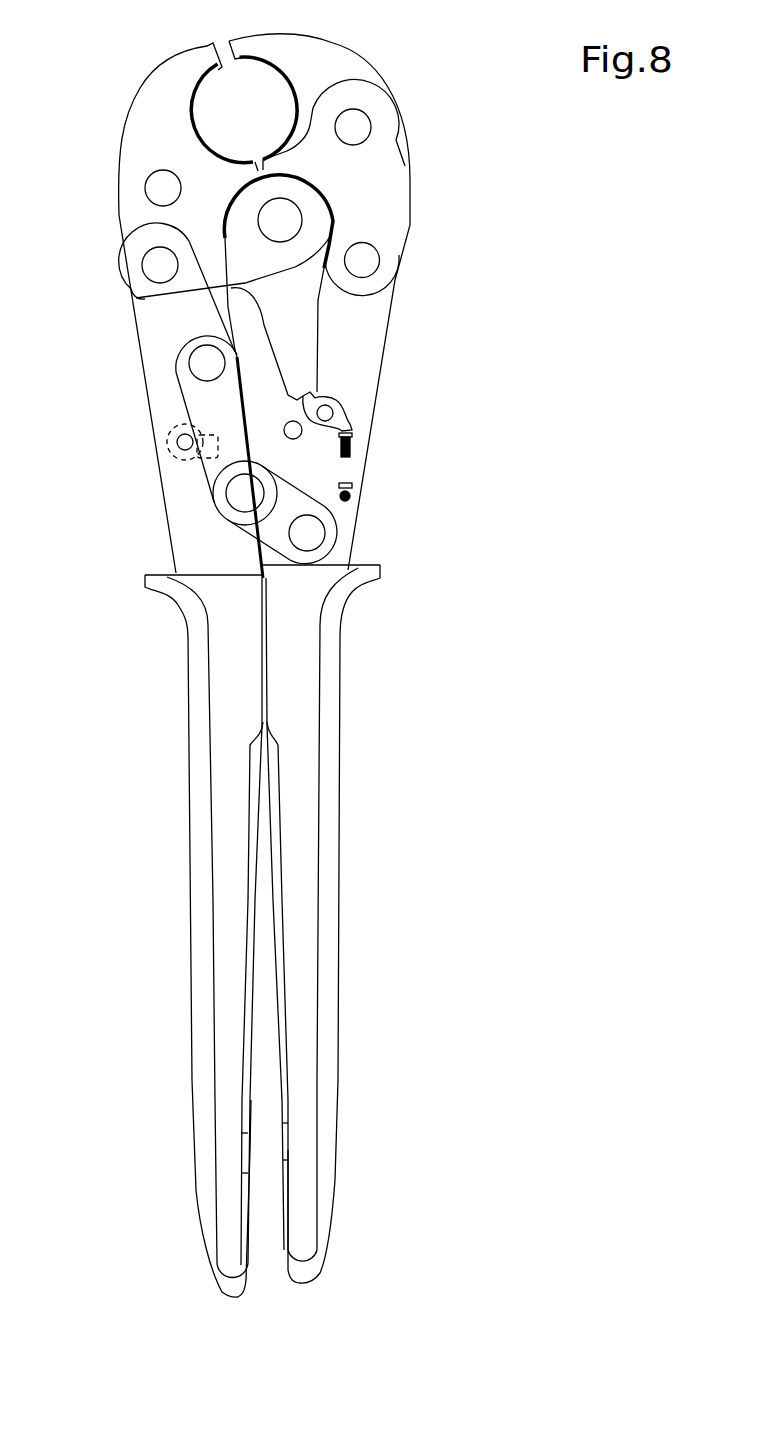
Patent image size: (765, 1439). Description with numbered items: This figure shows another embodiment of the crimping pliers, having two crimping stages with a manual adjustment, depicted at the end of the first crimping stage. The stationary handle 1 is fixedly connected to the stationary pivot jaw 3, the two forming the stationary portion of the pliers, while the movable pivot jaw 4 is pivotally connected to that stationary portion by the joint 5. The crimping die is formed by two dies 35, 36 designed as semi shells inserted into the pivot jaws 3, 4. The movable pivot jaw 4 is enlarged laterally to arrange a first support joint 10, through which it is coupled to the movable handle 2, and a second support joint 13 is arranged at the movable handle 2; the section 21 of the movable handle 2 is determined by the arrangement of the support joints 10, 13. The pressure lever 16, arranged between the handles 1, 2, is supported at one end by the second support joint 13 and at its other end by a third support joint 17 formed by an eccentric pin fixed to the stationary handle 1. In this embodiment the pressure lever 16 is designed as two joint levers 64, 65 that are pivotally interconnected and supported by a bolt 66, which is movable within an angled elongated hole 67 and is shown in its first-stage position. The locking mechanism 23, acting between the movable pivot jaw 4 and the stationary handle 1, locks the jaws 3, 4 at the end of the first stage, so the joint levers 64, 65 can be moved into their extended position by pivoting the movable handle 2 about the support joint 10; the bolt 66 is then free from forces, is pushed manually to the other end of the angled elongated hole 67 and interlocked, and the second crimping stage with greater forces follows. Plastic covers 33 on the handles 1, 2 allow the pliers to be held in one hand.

The stationary handle 1 is at (361, 924).
The movable handle 2 is at (173, 911).
The stationary pivot jaw 3 is at (313, 63).
The movable pivot jaw 4 is at (172, 80).
The joint 5 is at (285, 220).
The first support joint 10 is at (108, 245).
The second support joint 13 is at (185, 347).
The pressure lever 16 is at (175, 390).
The third support joint 17 is at (327, 540).
The section 21 is at (167, 313).
The locking mechanism 23 is at (337, 390).
The plastic covers 33 is at (328, 772).
The die 35 is at (276, 63).
The die 36 is at (205, 68).
The joint lever 64 is at (210, 403).
The joint lever 65 is at (292, 506).
The bolt 66 is at (173, 438).
The angled elongated hole 67 is at (205, 467).